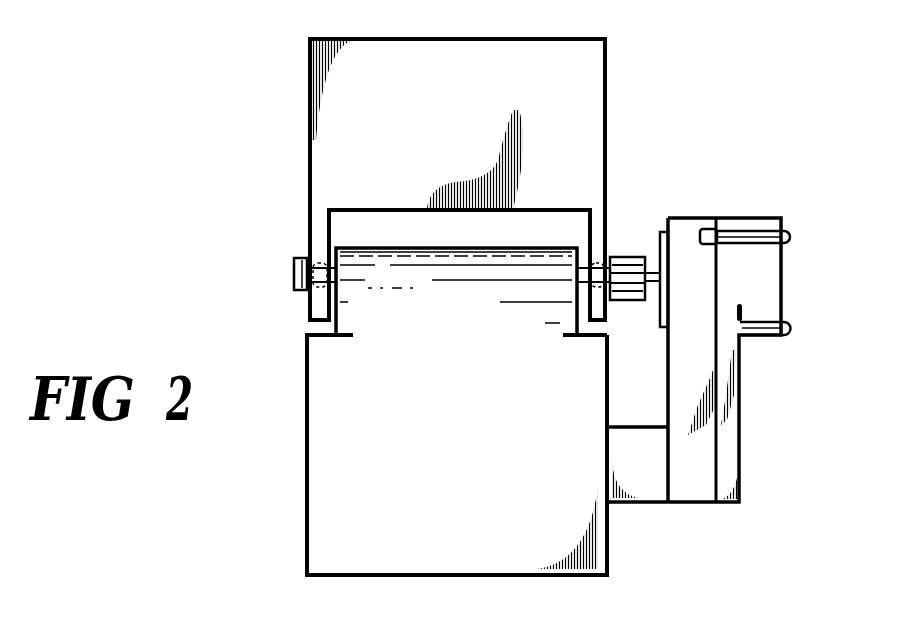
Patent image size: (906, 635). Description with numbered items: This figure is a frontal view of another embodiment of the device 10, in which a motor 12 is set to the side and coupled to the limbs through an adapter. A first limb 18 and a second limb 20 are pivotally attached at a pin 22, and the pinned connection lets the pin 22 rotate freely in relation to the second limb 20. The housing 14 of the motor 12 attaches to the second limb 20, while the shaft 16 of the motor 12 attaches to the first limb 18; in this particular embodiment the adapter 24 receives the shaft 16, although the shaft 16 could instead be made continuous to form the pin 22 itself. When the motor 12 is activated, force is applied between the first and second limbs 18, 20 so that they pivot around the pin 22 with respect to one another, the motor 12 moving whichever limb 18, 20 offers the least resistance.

The device 10 is at (778, 145).
The motor 12 is at (748, 442).
The housing 14 is at (733, 363).
The shaft 16 is at (650, 268).
The first limb 18 is at (594, 66).
The second limb 20 is at (594, 540).
The pin 22 is at (322, 240).
The adapter 24 is at (619, 256).